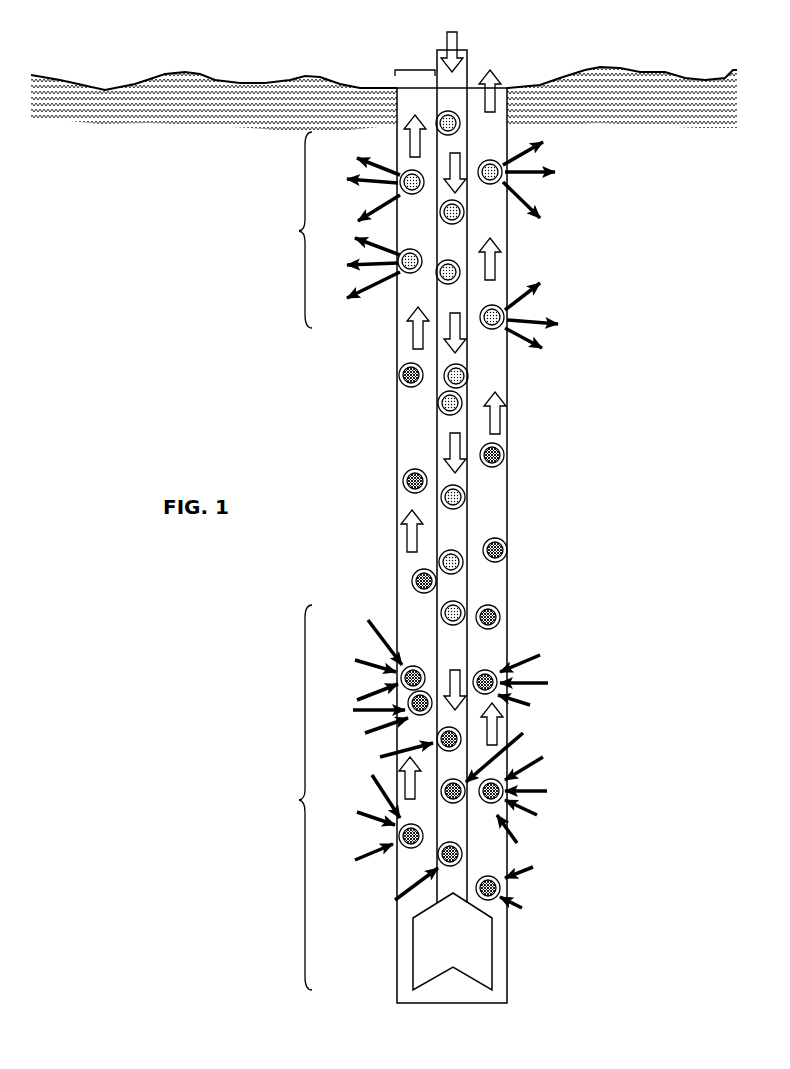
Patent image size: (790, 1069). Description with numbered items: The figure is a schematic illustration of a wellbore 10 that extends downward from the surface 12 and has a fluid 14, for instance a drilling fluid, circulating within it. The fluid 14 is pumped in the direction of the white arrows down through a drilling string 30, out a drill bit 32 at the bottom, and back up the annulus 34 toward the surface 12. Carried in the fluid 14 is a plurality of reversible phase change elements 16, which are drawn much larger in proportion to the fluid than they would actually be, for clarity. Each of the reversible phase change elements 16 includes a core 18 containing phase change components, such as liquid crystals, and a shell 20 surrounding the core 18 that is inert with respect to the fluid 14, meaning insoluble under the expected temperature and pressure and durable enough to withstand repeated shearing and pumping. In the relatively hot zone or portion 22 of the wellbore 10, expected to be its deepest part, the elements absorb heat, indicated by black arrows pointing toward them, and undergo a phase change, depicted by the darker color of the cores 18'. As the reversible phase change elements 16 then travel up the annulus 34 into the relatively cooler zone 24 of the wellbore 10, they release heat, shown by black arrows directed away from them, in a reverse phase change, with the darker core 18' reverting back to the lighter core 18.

The wellbore 10 is at (522, 492).
The surface 12 is at (593, 67).
The fluid 14 is at (442, 50).
The reversible phase change elements 16 is at (448, 410).
The core 18 is at (455, 385).
The darker core 18' is at (449, 735).
The shell 20 is at (458, 216).
The relatively hot zone or portion 22 is at (299, 800).
The relatively cooler zone 24 is at (299, 231).
The drilling string 30 is at (475, 72).
The drill bit 32 is at (466, 949).
The annulus 34 is at (418, 70).